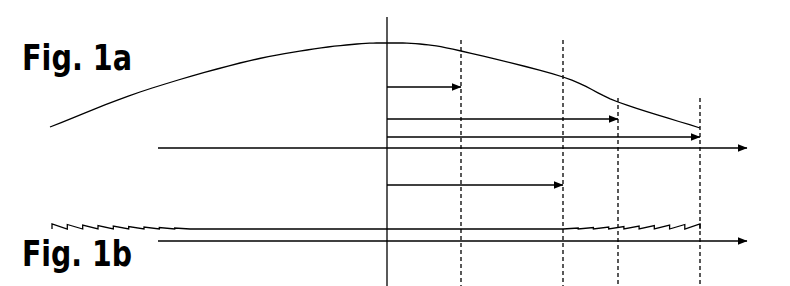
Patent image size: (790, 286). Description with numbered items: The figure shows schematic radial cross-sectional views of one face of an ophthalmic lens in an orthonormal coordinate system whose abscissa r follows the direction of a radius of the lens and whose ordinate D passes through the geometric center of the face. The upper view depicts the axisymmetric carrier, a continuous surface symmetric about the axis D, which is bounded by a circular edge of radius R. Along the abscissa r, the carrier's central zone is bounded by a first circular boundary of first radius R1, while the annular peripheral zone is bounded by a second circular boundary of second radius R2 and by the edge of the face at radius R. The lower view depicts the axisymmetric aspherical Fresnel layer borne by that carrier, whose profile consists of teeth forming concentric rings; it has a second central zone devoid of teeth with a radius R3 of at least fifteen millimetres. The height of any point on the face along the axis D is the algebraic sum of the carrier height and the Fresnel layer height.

In FIG. 1A, the axis D is at (387, 30).
In FIG. 1A, the first radius R1 is at (424, 75).
In FIG. 1A, the second radius R2 is at (502, 108).
In FIG. 1B, the radius of second central zone R3 is at (475, 171).
In FIG. 1A, the radius of the edge R is at (543, 126).
In FIG. 1A, the abscissa r is at (452, 130).
In FIG. 1B, the abscissa r is at (452, 221).